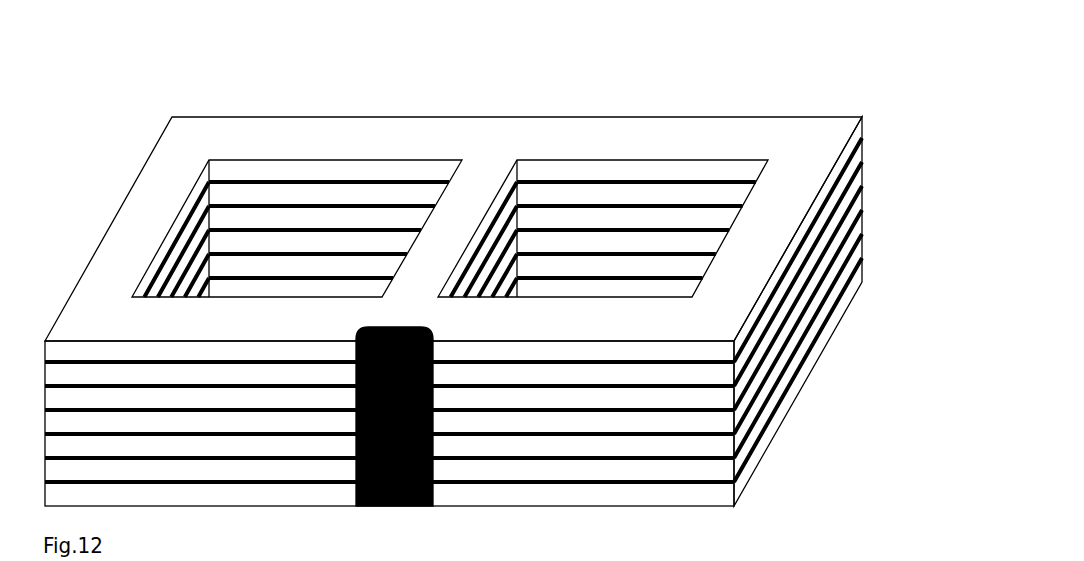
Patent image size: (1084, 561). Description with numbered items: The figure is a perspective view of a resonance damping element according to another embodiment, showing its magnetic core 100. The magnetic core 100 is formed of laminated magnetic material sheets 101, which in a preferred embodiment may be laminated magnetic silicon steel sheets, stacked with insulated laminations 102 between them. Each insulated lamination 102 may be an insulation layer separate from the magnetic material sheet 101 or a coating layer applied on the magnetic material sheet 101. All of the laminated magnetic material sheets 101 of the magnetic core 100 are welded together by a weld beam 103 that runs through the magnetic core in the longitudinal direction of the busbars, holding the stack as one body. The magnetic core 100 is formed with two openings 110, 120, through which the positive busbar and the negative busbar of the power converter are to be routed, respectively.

The magnetic core 100 is at (502, 262).
The laminated magnetic material sheet 101 is at (782, 130).
The insulated lamination 102 is at (863, 188).
The weld beam 103 is at (400, 325).
The opening 110 is at (217, 222).
The opening 120 is at (635, 195).